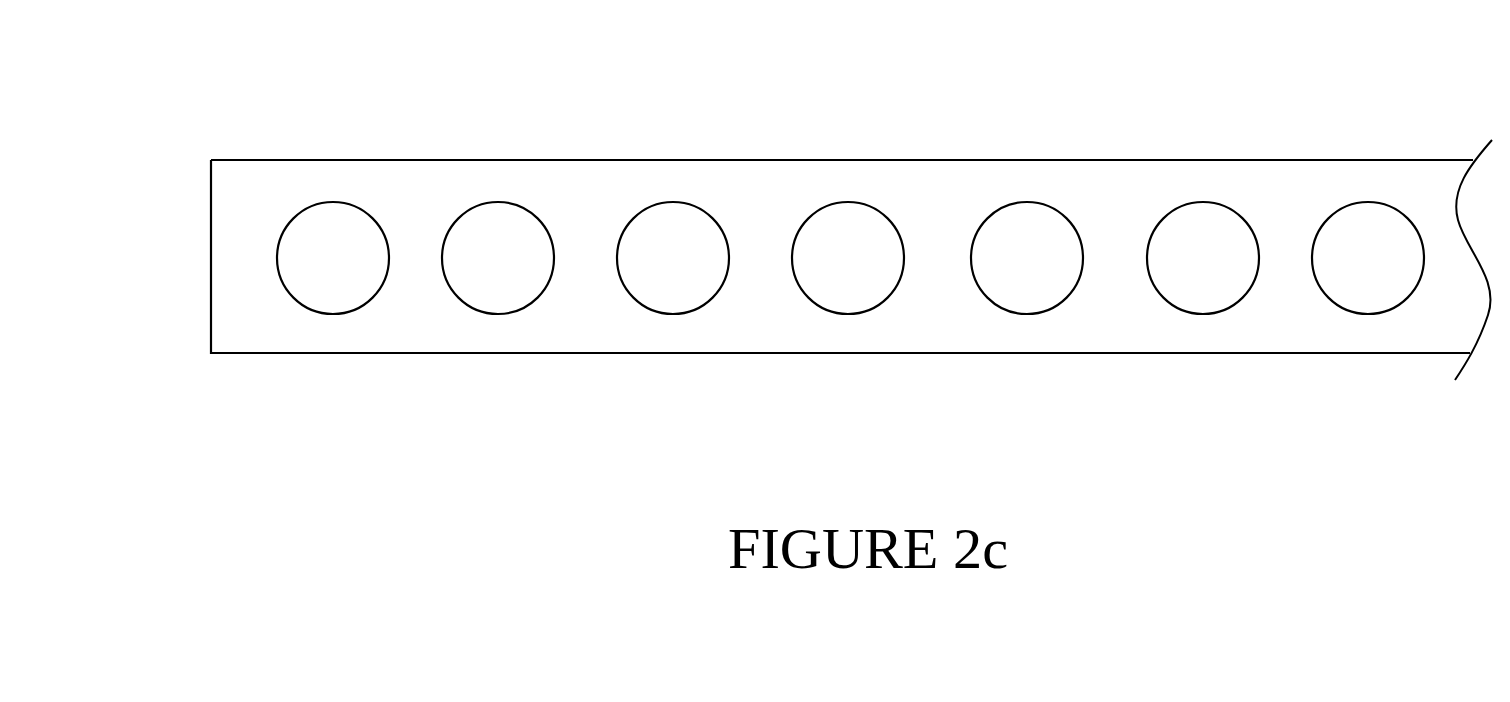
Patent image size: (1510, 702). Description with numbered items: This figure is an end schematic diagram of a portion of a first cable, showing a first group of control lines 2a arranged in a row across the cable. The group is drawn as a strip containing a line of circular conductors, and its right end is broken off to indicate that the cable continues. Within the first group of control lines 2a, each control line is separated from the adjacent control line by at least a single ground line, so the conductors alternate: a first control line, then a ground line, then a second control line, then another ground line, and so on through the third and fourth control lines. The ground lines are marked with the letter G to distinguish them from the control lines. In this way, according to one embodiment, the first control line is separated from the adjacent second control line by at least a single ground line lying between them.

The first group of control lines 2a is at (804, 260).